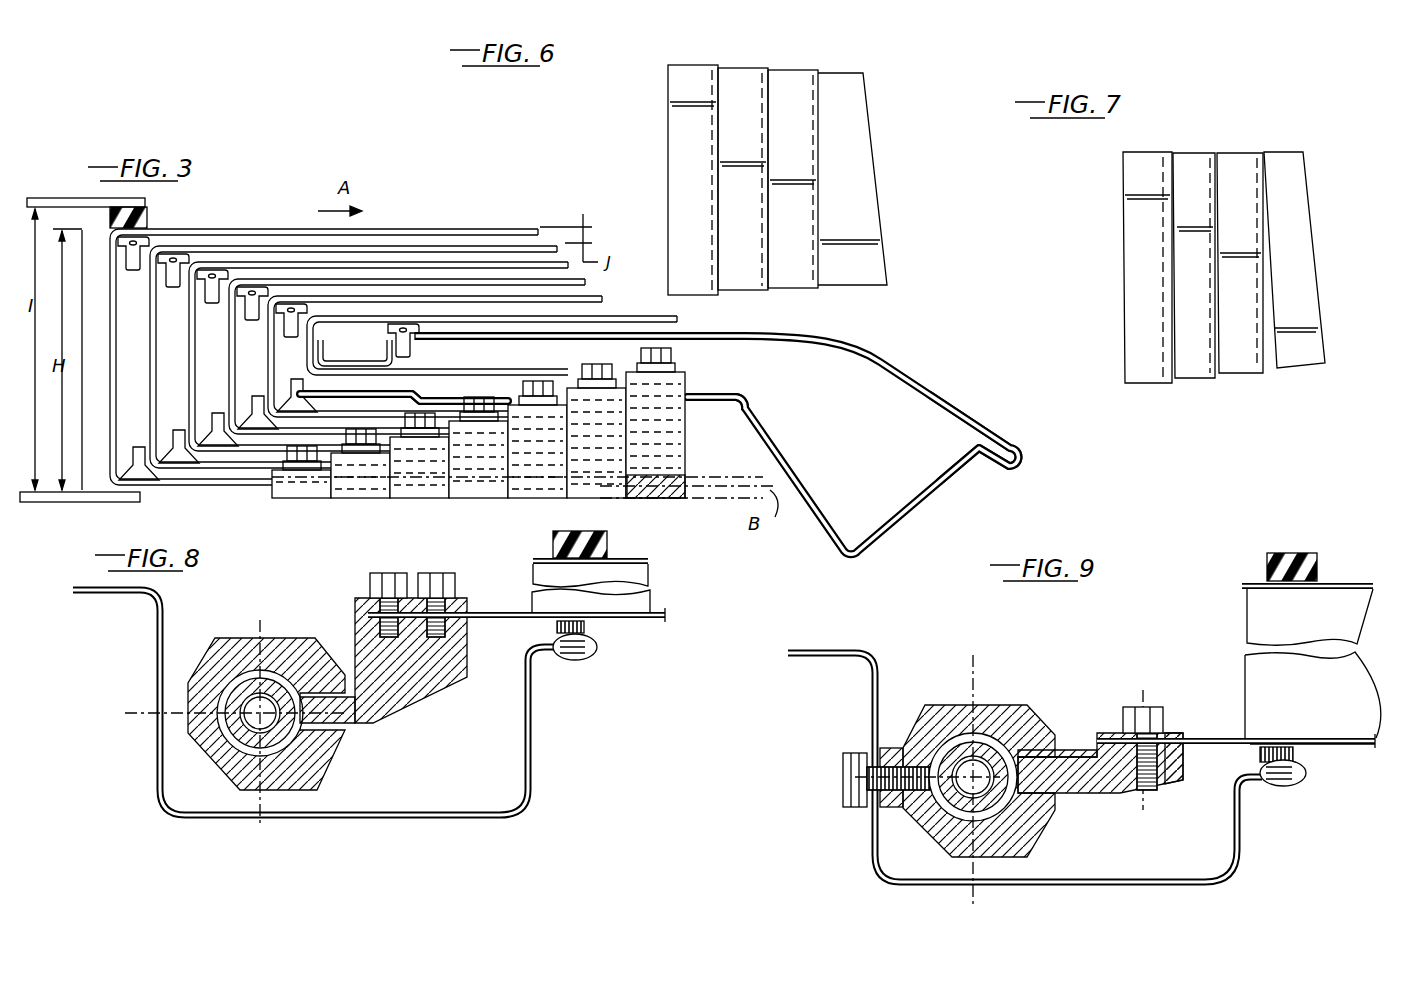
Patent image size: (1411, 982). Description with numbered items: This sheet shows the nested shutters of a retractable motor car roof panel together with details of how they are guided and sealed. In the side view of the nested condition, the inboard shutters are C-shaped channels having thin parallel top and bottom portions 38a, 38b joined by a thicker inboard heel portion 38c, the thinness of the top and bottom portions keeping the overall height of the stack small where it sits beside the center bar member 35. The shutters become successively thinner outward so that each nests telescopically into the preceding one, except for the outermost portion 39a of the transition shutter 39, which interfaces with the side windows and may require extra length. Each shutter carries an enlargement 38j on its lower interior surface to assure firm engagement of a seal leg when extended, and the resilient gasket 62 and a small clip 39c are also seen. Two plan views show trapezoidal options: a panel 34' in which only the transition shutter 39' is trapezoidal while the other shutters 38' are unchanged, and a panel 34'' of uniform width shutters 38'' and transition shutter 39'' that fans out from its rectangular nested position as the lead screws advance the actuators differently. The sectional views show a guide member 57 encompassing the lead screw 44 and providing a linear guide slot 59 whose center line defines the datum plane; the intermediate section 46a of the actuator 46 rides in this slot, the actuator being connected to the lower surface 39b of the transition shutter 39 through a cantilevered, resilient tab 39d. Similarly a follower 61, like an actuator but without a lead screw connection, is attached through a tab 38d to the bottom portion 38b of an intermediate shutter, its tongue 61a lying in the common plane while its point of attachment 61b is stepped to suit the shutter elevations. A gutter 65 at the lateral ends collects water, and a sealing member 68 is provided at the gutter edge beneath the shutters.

In FIG. 3, the center bar member 35 is at (68, 198).
In FIG. 3, the top portion 38a is at (256, 232).
In FIG. 9, the top portion 38a is at (1361, 583).
In FIG. 3, the bottom portion 38b is at (206, 493).
In FIG. 9, the bottom portion 38b is at (1341, 746).
In FIG. 3, the inboard heel portion 38c is at (82, 502).
In FIG. 3, the enlargement 38j is at (545, 486).
In FIG. 3, the strip clip 39c is at (372, 353).
In FIG. 3, the follower 61 is at (292, 500).
In FIG. 9, the follower 61 is at (1114, 735).
In FIG. 3, the actuator 46 is at (673, 429).
In FIG. 8, the actuator 46 is at (356, 606).
In FIG. 3, the transition shutter 39 is at (659, 433).
In FIG. 3, the outermost portion 39a is at (966, 406).
In FIG. 3, the lower surface 39b is at (716, 390).
In FIG. 8, the lower surface 39b is at (653, 622).
In FIG. 8, the tab 39d is at (501, 612).
In FIG. 6, the panel 34' is at (819, 180).
In FIG. 6, the transition shutter 39' is at (894, 179).
In FIG. 6, the shutter 38' is at (743, 196).
In FIG. 7, the panel 34'' is at (1242, 273).
In FIG. 7, the transition shutter 39'' is at (1312, 259).
In FIG. 7, the shutter 38'' is at (1193, 288).
In FIG. 8, the guide member 57 is at (234, 640).
In FIG. 9, the guide member 57 is at (951, 706).
In FIG. 8, the lead screw 44 is at (250, 710).
In FIG. 8, the guide slot 59 is at (326, 736).
In FIG. 9, the guide slot 59 is at (1044, 801).
In FIG. 8, the gutter 65 is at (160, 752).
In FIG. 9, the gutter 65 is at (871, 830).
In FIG. 8, the intermediate section 46a is at (340, 726).
In FIG. 8, the sealing member 68 is at (576, 662).
In FIG. 9, the sealing member 68 is at (1290, 788).
In FIG. 8, the resilient gasket 62 is at (559, 540).
In FIG. 9, the resilient gasket 62 is at (1311, 537).
In FIG. 9, the tongue 61a is at (1099, 752).
In FIG. 9, the point of attachment 61b is at (1184, 760).
In FIG. 9, the tab 38d is at (1201, 738).